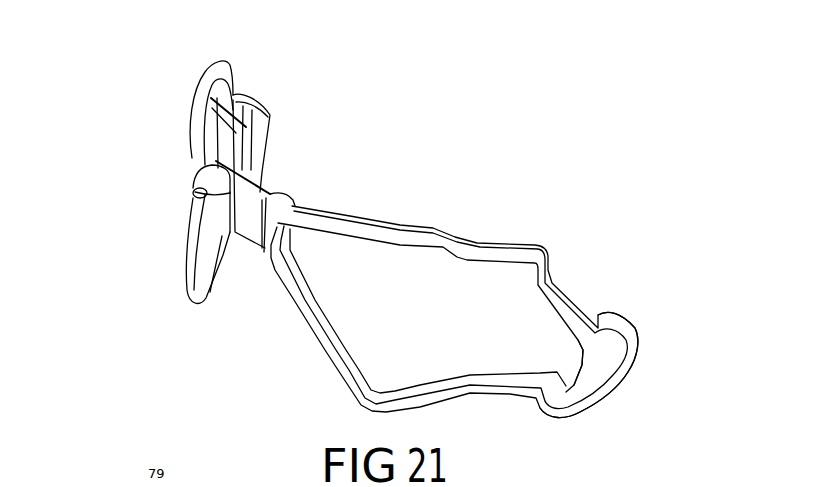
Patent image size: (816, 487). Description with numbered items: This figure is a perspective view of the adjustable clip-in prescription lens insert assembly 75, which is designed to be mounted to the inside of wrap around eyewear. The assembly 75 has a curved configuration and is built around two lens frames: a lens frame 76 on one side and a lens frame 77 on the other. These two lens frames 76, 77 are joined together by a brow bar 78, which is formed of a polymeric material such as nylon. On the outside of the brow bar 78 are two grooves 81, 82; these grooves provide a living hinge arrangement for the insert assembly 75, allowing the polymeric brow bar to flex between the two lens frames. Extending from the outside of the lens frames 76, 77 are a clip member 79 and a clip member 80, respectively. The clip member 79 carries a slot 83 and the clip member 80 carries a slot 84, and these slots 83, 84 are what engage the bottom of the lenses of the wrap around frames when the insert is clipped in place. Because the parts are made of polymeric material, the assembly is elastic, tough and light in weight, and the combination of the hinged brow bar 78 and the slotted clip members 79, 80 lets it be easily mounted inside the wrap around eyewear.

The adjustable clip-in prescription lens insert assembly 75 is at (135, 146).
The lens frame 76 is at (194, 92).
The lens frame 77 is at (507, 251).
The brow bar 78 is at (291, 176).
The clip member 79 is at (276, 86).
The clip member 80 is at (642, 387).
The groove 81 is at (230, 232).
The groove 82 is at (264, 250).
The slot 83 is at (241, 135).
The slot 84 is at (566, 346).